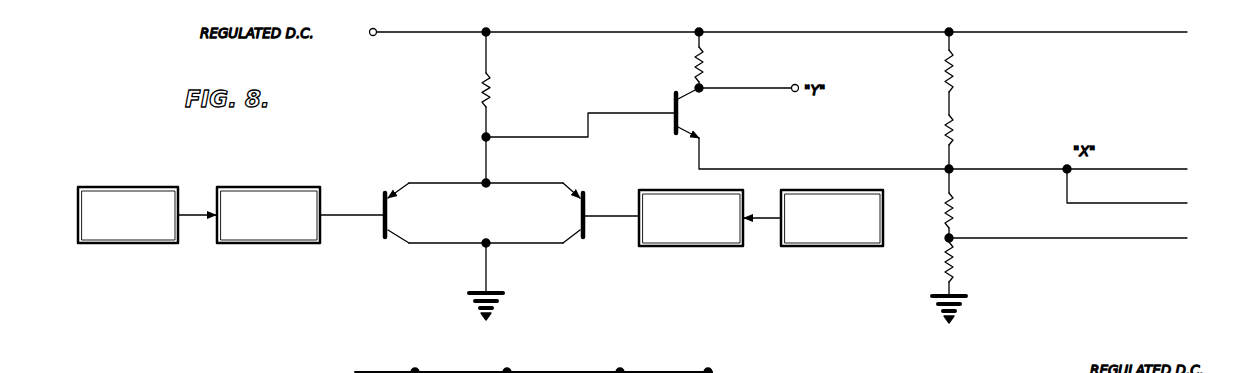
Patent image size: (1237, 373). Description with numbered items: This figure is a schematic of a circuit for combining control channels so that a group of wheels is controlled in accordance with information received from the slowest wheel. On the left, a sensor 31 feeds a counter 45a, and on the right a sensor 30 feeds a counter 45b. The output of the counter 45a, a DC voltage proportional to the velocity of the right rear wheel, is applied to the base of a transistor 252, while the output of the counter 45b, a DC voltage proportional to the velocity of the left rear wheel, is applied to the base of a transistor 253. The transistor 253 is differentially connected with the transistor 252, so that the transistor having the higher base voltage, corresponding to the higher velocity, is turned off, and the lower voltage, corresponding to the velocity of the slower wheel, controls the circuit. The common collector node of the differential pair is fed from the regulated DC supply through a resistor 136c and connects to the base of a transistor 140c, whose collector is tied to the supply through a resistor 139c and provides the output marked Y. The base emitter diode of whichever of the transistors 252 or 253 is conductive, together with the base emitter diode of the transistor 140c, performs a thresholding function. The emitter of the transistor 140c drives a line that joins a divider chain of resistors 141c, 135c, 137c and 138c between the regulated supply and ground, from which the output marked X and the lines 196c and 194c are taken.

The sensor 31 is at (118, 186).
The counter 45a is at (250, 186).
The counter 45b is at (698, 248).
The sensor 30 is at (840, 248).
The transistor 252 is at (397, 240).
The transistor 253 is at (600, 258).
The resistor 136c is at (481, 80).
The resistor 139c is at (703, 67).
The transistor 140c is at (683, 128).
The resistor 141c is at (953, 78).
The resistor 135c is at (953, 137).
The resistor 137c is at (953, 215).
The resistor 138c is at (953, 265).
The output line 196c is at (1112, 204).
The output line 194c is at (1104, 240).